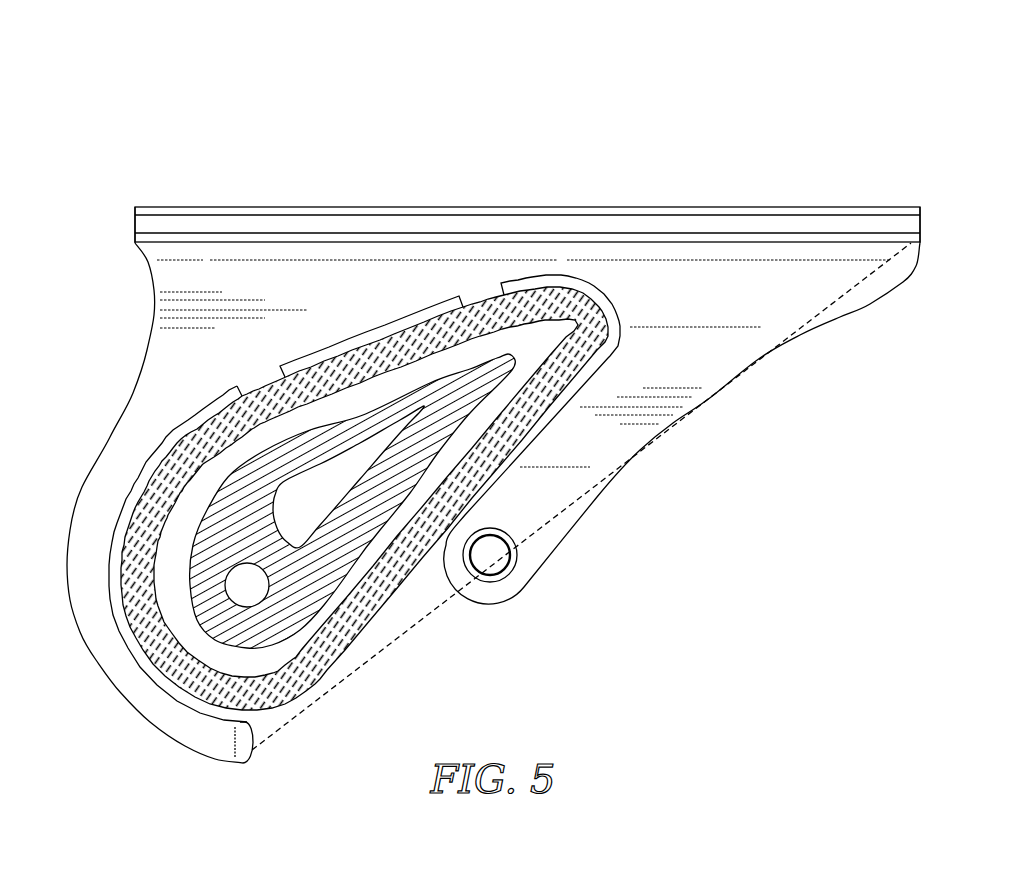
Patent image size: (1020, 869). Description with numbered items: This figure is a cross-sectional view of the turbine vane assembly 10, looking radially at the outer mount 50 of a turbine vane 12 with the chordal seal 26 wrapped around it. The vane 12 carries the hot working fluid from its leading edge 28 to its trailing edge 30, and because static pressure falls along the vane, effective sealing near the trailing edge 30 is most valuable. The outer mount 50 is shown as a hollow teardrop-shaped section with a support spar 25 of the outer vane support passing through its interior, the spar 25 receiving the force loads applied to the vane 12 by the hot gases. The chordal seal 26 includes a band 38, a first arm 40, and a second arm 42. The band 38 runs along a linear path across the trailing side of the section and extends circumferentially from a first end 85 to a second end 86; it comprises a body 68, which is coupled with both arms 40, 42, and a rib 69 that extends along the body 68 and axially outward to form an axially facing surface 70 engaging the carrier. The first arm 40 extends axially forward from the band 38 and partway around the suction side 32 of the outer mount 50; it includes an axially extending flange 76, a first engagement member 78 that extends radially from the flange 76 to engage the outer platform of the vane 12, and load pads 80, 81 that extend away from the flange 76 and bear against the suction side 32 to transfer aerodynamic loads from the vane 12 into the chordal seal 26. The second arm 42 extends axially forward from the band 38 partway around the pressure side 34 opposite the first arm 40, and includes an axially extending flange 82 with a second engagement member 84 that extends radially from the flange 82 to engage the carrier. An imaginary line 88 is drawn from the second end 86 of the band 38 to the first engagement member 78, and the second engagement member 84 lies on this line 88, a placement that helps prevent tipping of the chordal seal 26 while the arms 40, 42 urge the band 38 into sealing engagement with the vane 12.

The turbine vane assembly 10 is at (475, 424).
The turbine vane 12 is at (581, 534).
The support spar 25 is at (386, 386).
The chordal seal 26 is at (527, 147).
The leading edge 28 is at (172, 689).
The trailing edge 30 is at (682, 388).
The suction side 32 is at (323, 535).
The pressure side 34 is at (364, 535).
The band 38 is at (527, 148).
The first arm 40 is at (128, 503).
The second arm 42 is at (682, 388).
The outer mount 50 is at (338, 672).
The body 68 is at (527, 148).
The rib 69 is at (527, 148).
The axially facing surface 70 is at (507, 207).
The axially extending flange 76 is at (59, 531).
The first engagement member 78 is at (241, 770).
The load pad 80 is at (371, 269).
The load pad 81 is at (455, 297).
The axially extending flange 82 is at (598, 503).
The second engagement member 84 is at (491, 585).
The first end 85 is at (129, 230).
The second end 86 is at (929, 233).
The imaginary line 88 is at (699, 404).